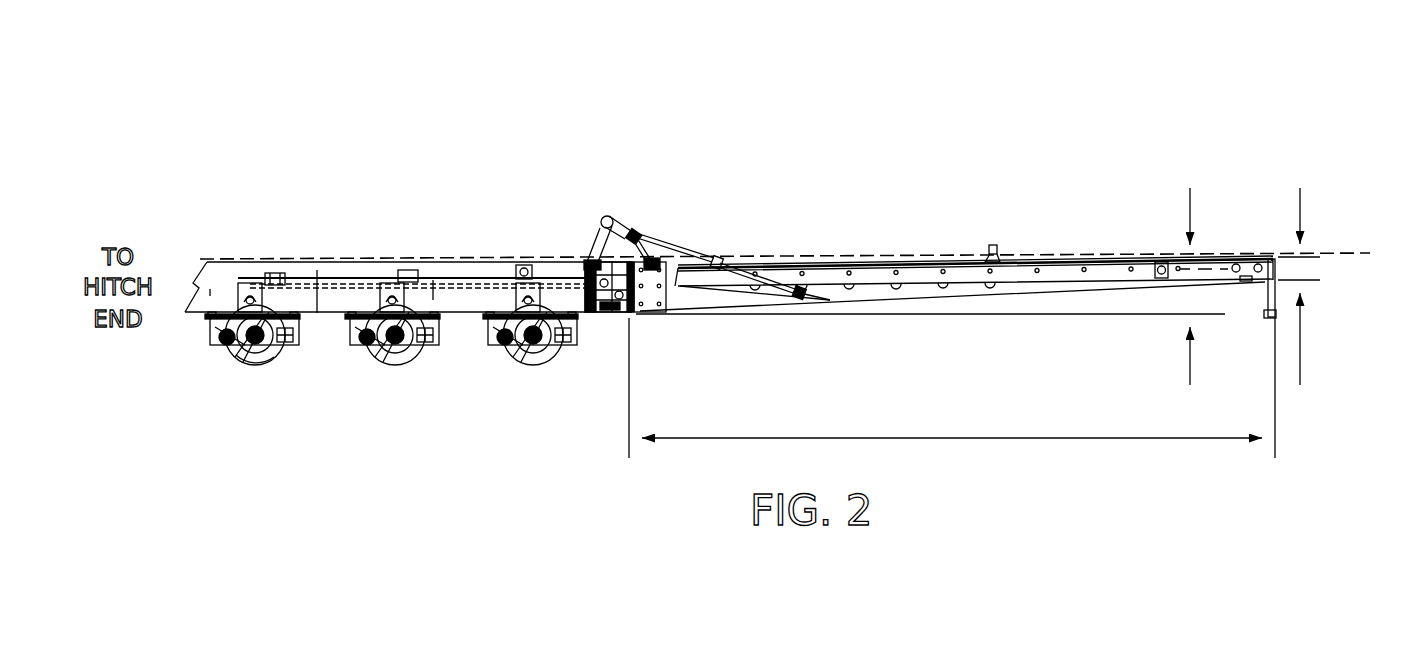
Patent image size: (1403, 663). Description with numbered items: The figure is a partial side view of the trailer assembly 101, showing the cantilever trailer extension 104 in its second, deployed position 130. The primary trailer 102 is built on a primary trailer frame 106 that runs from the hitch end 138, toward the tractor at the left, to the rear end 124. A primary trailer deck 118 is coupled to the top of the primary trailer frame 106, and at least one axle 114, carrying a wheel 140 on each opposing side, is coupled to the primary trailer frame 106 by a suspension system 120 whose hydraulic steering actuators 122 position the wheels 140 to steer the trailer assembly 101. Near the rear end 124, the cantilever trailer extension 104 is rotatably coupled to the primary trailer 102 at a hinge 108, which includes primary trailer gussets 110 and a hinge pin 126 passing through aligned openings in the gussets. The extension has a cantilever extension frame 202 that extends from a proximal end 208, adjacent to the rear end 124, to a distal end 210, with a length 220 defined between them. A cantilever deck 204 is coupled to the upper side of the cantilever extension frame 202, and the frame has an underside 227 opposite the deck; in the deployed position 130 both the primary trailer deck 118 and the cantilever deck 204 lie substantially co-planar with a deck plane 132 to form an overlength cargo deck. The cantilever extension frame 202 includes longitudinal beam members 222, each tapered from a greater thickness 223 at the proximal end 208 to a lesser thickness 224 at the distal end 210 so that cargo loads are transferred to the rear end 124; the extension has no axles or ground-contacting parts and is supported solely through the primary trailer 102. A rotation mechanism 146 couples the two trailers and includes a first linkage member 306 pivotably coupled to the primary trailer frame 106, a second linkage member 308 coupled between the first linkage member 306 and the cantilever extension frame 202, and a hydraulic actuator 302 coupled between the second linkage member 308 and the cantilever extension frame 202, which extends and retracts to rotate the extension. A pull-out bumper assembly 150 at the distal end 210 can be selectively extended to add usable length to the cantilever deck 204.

The trailer assembly 101 is at (696, 98).
The primary trailer 102 is at (389, 279).
The cantilever trailer extension 104 is at (969, 252).
The primary trailer frame 106 is at (588, 313).
The hinge 108 is at (605, 367).
The primary trailer gussets 110 is at (652, 272).
The axle 114 is at (252, 352).
The primary trailer deck 118 is at (568, 270).
The suspension system 120 is at (362, 359).
The hydraulic steering actuators 122 is at (487, 275).
The rear end 124 is at (587, 491).
The hinge pin 126 is at (640, 256).
The deployed position 130 is at (925, 221).
The deck plane 132 is at (752, 256).
The hitch end 138 is at (232, 244).
The wheel 140 is at (240, 355).
The rotation mechanism 146 is at (637, 213).
The pull-out bumper assembly 150 is at (1219, 226).
The cantilever extension frame 202 is at (863, 285).
The cantilever deck 204 is at (928, 266).
The proximal end 208 is at (683, 353).
The distal end 210 is at (1280, 546).
The length 220 is at (1045, 440).
The beam members 222 is at (1005, 285).
The greater thickness 223 is at (1189, 218).
The lesser thickness 224 is at (1300, 268).
The underside 227 is at (960, 296).
The hydraulic actuator 302 is at (792, 300).
The first linkage member 306 is at (594, 240).
The second linkage member 308 is at (630, 228).